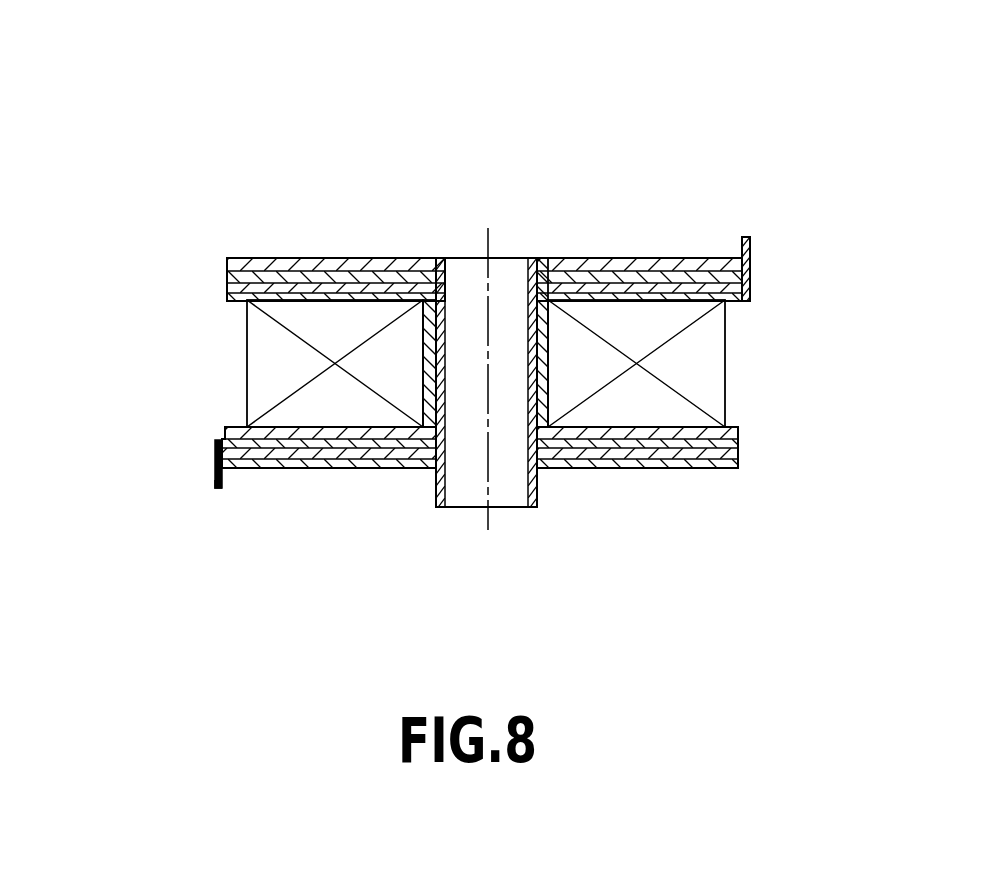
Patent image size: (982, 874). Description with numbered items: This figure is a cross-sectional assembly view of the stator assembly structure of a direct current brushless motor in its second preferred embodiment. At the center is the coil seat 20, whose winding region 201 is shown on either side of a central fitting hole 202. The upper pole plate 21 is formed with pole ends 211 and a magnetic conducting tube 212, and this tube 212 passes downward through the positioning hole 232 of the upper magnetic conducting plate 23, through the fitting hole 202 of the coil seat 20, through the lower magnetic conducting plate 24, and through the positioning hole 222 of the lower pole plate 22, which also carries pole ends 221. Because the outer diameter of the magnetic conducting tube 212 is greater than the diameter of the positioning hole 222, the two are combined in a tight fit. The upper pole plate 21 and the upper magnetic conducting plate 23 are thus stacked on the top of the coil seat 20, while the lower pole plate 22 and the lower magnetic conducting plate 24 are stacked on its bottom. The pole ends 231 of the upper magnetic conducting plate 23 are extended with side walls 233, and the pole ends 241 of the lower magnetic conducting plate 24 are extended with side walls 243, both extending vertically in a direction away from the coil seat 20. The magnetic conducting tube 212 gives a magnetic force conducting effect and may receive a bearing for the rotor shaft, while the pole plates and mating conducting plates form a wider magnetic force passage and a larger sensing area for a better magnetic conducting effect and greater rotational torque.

The coil seat 20 is at (728, 302).
The winding 201 is at (715, 358).
The fitting hole 202 is at (547, 330).
The upper pole plate 21 is at (349, 258).
The pole ends 211 is at (736, 256).
The magnetic conducting tube 212 is at (538, 500).
The lower pole plate 22 is at (650, 468).
The pole ends 221 is at (230, 470).
The positioning hole 222 is at (437, 472).
The upper magnetic conducting plate 23 is at (368, 262).
The pole ends 231 is at (730, 268).
The positioning hole 232 is at (543, 260).
The side walls 233 is at (751, 240).
The lower magnetic conducting plate 24 is at (717, 468).
The pole ends 241 is at (225, 433).
The side walls 243 is at (215, 480).